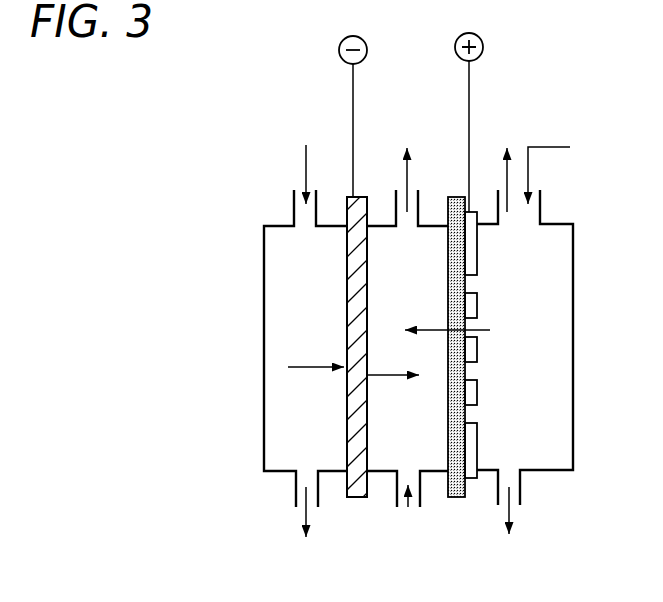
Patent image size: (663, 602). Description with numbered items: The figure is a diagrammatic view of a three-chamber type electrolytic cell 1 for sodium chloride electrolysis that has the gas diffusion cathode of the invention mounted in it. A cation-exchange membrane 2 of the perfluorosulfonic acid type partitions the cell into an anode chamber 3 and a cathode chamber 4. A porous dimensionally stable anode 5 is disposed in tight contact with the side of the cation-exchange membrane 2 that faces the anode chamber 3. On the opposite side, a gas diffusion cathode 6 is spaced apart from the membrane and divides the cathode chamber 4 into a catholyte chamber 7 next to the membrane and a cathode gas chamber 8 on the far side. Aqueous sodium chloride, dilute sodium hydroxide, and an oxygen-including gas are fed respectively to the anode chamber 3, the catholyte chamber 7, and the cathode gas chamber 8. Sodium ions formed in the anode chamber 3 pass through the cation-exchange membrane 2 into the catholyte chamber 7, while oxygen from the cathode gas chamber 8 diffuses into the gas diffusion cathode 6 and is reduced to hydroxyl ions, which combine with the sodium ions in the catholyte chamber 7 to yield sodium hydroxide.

The three-chamber type electrolytic cell 1 is at (234, 220).
The cation-exchange membrane 2 is at (468, 252).
The anode chamber 3 is at (558, 292).
The cathode chamber 4 is at (208, 258).
The porous dimensionally stable anode 5 is at (478, 387).
The gas diffusion cathode 6 is at (348, 426).
The catholyte chamber 7 is at (385, 276).
The cathode gas chamber 8 is at (292, 322).